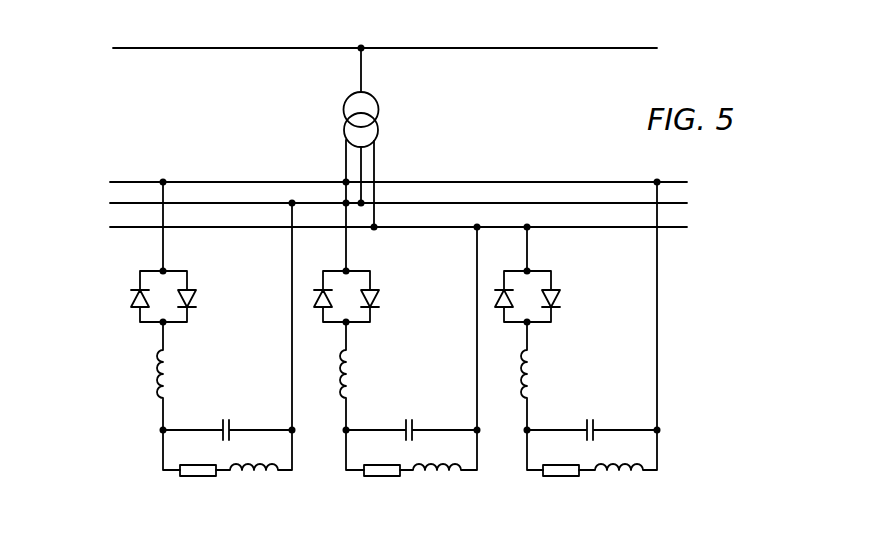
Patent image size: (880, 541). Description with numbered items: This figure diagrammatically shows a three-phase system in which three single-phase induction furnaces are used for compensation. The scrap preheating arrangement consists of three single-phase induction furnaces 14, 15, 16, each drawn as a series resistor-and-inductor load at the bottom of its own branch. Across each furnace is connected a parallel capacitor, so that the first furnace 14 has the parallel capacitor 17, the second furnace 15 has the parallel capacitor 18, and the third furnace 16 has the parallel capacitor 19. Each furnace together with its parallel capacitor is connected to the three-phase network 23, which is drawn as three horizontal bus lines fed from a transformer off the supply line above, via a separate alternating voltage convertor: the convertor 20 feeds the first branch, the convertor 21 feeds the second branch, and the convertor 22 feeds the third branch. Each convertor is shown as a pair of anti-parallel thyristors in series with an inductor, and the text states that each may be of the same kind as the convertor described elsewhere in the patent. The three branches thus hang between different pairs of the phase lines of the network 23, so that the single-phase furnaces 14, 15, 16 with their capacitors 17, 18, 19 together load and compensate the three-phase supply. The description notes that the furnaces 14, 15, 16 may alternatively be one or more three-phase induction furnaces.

The single-phase induction furnace 14 is at (178, 483).
The single-phase induction furnace 15 is at (362, 483).
The single-phase induction furnace 16 is at (541, 483).
The parallel capacitor 17 is at (232, 420).
The parallel capacitor 18 is at (415, 420).
The parallel capacitor 19 is at (596, 420).
The alternating voltage convertor 20 is at (219, 263).
The alternating voltage convertor 21 is at (391, 263).
The alternating voltage convertor 22 is at (573, 263).
The three-phase network 23 is at (106, 176).